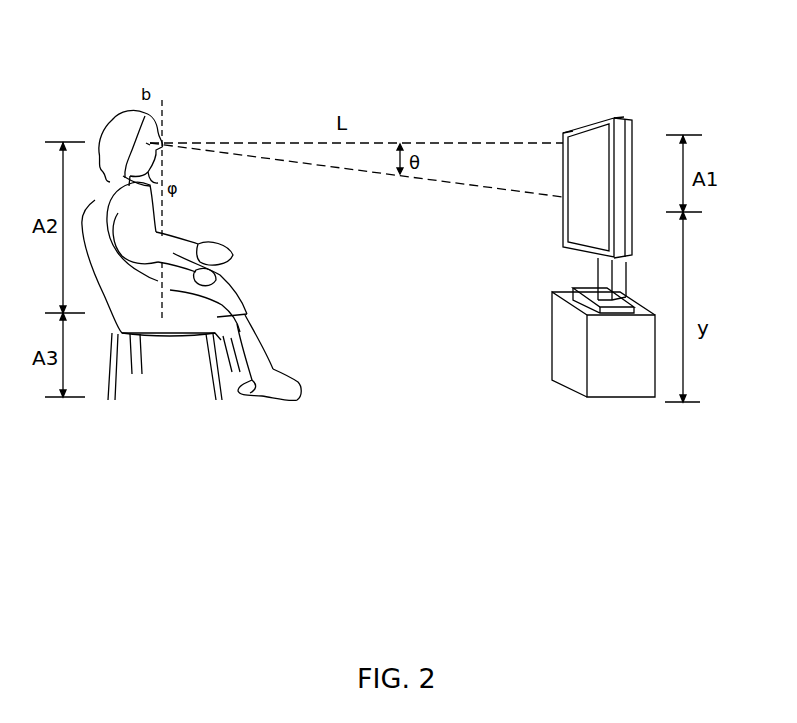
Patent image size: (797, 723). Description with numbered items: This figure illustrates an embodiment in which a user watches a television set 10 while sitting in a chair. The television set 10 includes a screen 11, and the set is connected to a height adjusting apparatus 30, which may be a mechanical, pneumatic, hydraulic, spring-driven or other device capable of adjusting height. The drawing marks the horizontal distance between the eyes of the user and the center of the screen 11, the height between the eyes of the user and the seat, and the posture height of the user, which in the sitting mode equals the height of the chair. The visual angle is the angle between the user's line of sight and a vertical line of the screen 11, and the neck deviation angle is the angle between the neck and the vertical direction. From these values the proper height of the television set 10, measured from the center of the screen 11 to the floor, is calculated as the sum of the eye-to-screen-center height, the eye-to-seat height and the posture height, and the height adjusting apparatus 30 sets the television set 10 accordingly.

The television set 10 is at (581, 133).
The screen 11 is at (583, 173).
The height adjusting apparatus 30 is at (610, 284).